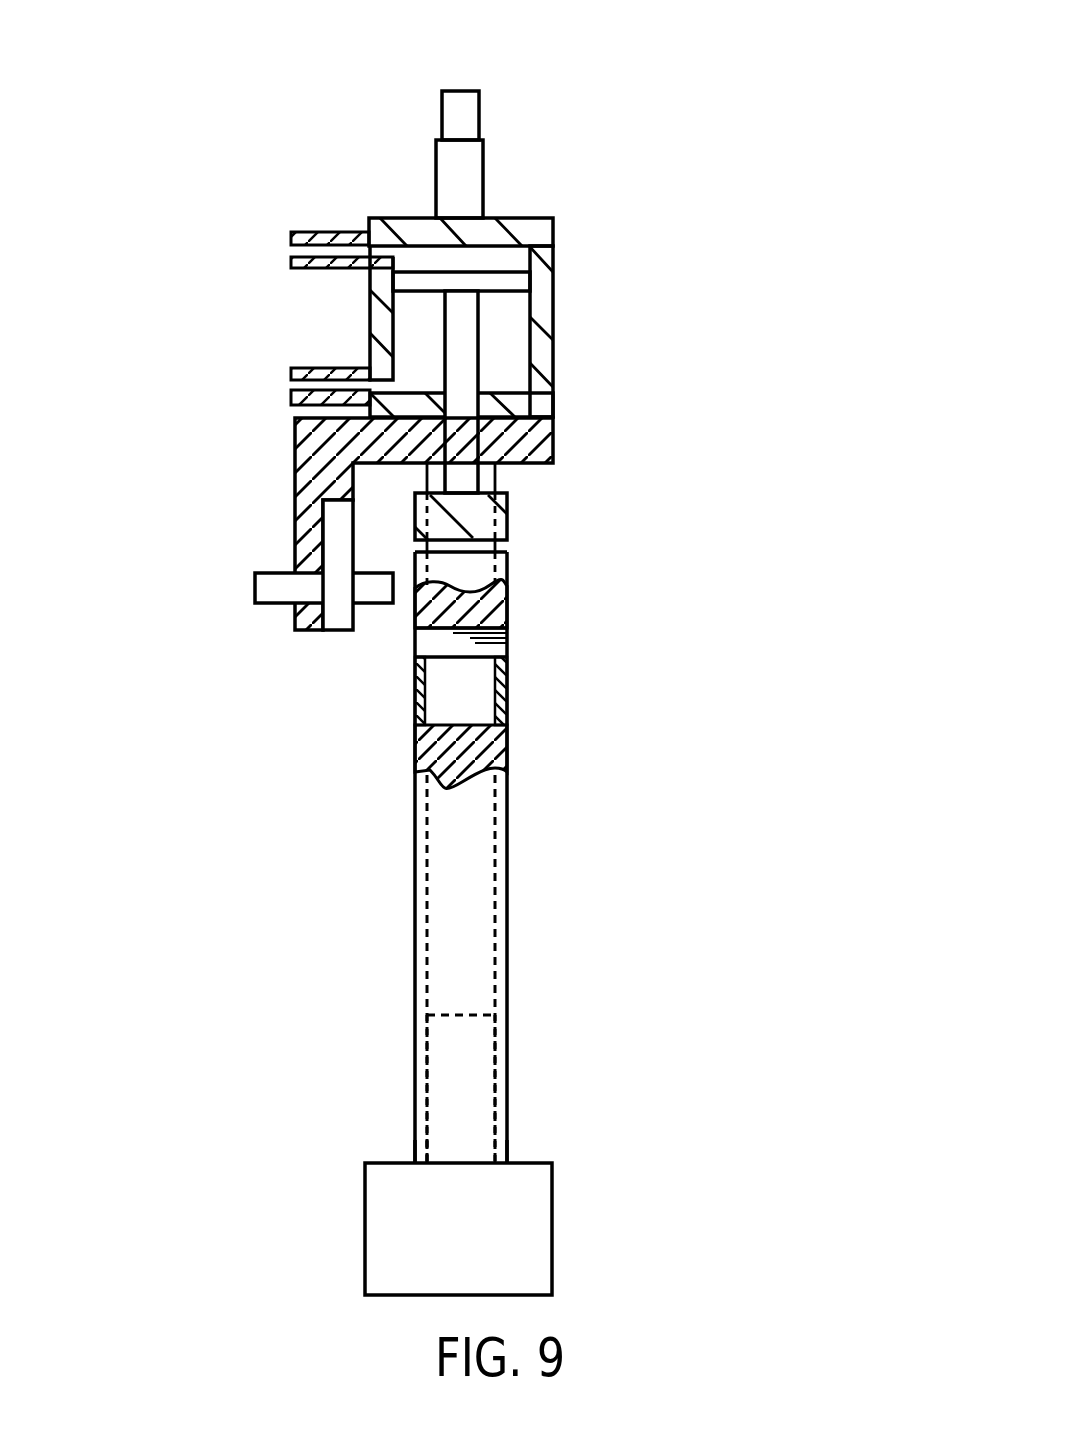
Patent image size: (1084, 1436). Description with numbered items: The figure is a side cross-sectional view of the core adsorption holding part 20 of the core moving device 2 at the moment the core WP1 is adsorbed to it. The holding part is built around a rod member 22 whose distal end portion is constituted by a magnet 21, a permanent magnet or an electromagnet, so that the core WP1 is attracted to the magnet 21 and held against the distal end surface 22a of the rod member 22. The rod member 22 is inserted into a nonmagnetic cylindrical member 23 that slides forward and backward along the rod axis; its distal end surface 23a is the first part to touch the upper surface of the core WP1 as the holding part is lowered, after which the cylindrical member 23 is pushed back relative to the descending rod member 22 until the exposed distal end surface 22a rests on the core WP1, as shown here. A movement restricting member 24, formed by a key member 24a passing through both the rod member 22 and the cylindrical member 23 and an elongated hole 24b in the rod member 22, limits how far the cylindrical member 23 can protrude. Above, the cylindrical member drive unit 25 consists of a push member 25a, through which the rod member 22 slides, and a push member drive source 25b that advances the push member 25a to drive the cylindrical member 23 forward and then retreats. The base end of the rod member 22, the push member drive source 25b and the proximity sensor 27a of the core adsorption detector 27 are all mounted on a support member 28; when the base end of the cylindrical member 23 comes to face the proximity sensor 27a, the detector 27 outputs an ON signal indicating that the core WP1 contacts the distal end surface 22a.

The core moving device 2 is at (602, 115).
The core adsorption holding part 20 is at (550, 133).
The magnet 21 is at (447, 1043).
The rod member 22 is at (450, 1000).
The distal end surface of the rod member 22a is at (462, 1167).
The cylindrical member 23 is at (510, 825).
The distal end surface of the cylindrical member 23a is at (503, 1164).
The movement restricting member 24 is at (571, 670).
The key member 24a is at (508, 645).
The elongated hole 24b is at (508, 590).
The cylindrical member drive unit 25 is at (520, 358).
The push member 25a is at (507, 515).
The push member drive source 25b is at (555, 245).
The core adsorption detector 27 is at (326, 620).
The proximity sensor 27a is at (372, 593).
The support member 28 is at (553, 440).
The core WP1 is at (520, 1258).